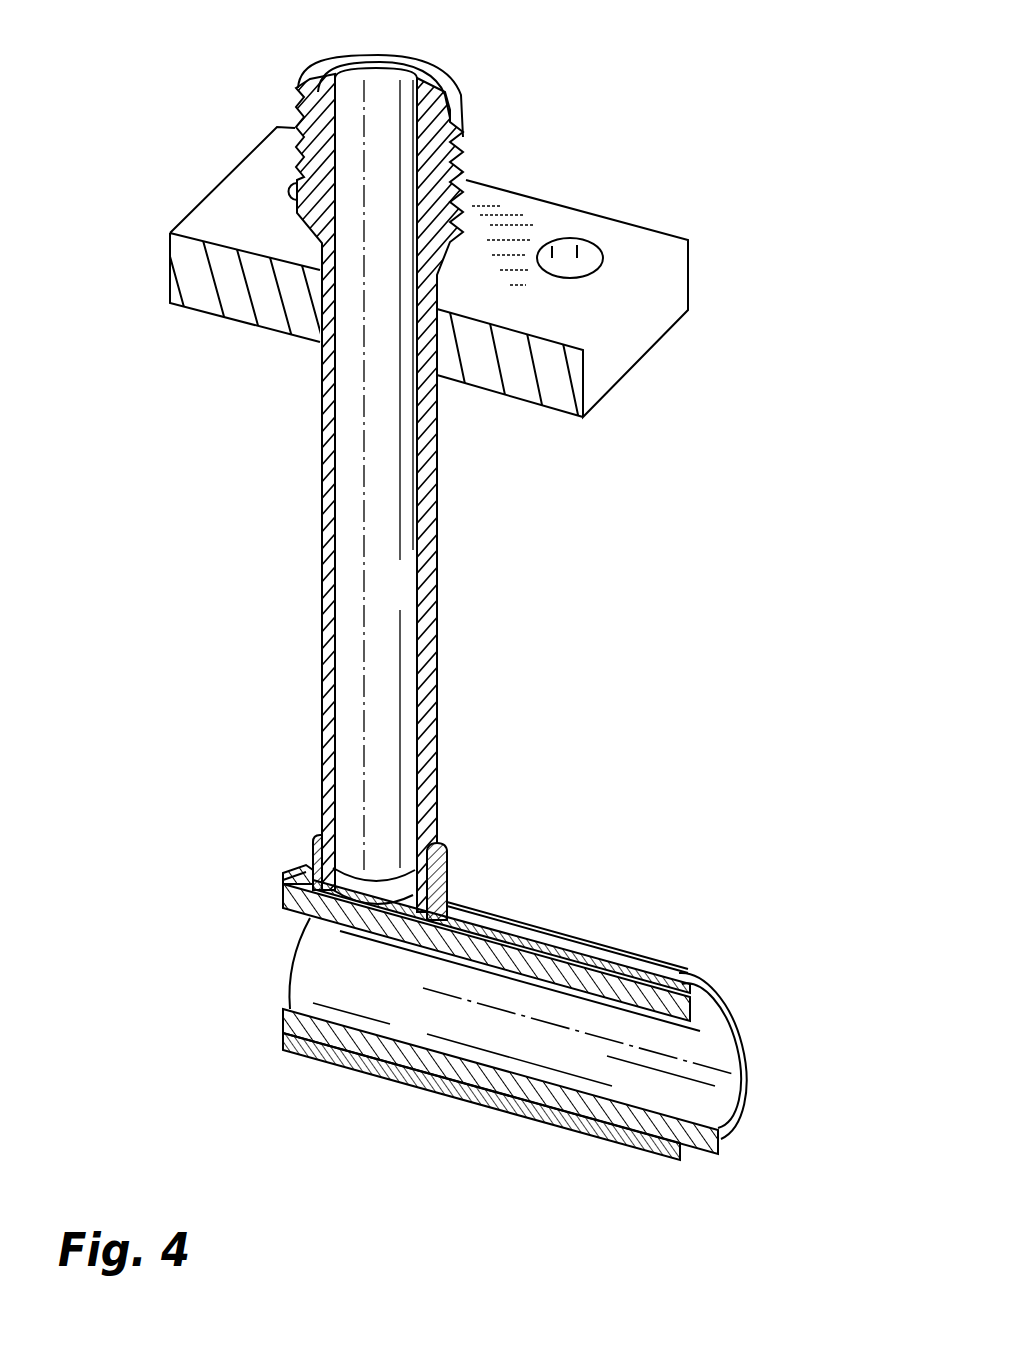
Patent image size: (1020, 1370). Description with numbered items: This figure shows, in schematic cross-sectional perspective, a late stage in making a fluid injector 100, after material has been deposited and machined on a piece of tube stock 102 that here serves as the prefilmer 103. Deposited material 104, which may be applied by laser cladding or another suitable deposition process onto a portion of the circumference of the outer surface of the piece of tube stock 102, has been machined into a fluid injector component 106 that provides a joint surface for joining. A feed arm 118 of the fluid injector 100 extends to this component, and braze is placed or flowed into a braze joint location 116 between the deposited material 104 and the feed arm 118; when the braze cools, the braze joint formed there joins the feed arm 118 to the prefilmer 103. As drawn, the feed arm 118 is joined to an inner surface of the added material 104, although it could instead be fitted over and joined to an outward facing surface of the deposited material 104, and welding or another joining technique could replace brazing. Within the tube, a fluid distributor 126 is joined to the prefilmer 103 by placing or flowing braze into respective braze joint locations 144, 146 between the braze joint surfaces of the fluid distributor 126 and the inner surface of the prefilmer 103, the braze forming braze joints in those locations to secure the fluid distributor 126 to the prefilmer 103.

The fluid injector 100 is at (700, 148).
The piece of tube stock 102 is at (530, 932).
The prefilmer 103 is at (486, 1020).
The deposited material 104 is at (447, 867).
The fluid injector component 106 is at (437, 881).
The braze joint location 116 is at (313, 818).
The feed arm 118 is at (437, 563).
The fluid distributor 126 is at (517, 1033).
The braze joint location 144 is at (272, 1060).
The braze joint location 146 is at (656, 952).